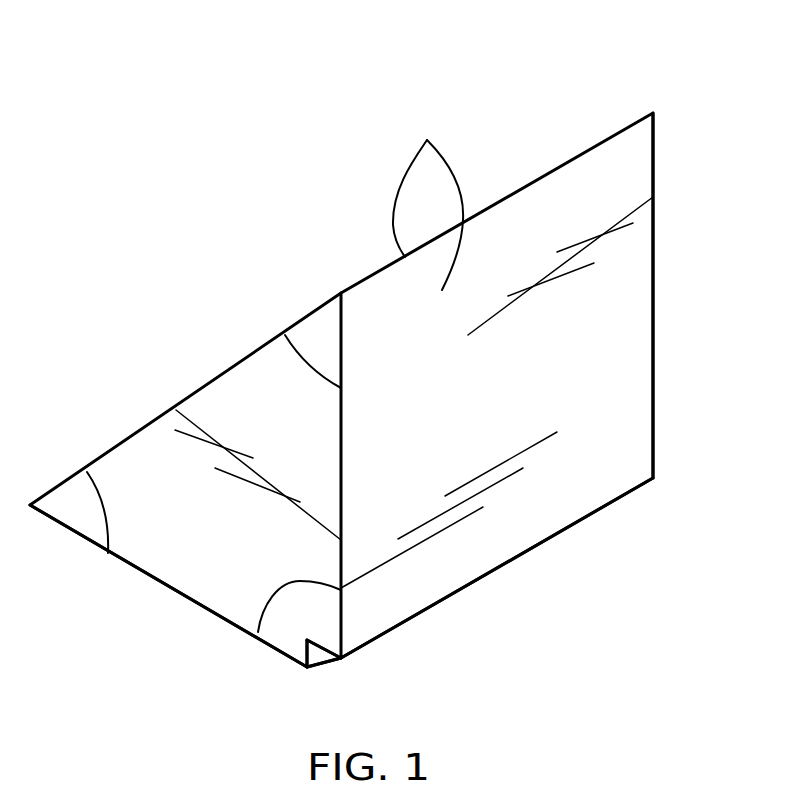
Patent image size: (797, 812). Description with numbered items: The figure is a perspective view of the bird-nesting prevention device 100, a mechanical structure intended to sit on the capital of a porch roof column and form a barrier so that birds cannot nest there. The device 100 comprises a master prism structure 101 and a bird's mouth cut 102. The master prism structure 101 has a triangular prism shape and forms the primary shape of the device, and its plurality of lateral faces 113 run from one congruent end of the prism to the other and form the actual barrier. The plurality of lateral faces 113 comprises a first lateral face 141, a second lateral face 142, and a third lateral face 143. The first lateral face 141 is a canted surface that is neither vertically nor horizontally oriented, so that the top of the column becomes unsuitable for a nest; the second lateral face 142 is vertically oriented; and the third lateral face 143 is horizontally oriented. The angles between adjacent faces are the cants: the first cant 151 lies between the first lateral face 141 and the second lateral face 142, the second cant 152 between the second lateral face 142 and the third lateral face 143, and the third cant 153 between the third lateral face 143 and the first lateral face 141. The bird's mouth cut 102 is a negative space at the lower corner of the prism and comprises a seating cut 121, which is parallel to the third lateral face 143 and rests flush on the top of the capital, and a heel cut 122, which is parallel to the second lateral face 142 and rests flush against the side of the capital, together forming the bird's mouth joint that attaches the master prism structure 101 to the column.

The bird-nesting prevention device 100 is at (206, 113).
The master prism structure 101 is at (653, 185).
The bird's mouth cut 102 is at (332, 668).
The plurality of lateral faces 113 is at (428, 192).
The seating cut 121 is at (325, 648).
The heel cut 122 is at (317, 670).
The first lateral face 141 is at (159, 415).
The second lateral face 142 is at (525, 525).
The third lateral face 143 is at (170, 590).
The first cant 151 is at (305, 365).
The second cant 152 is at (281, 583).
The third cant 153 is at (104, 512).